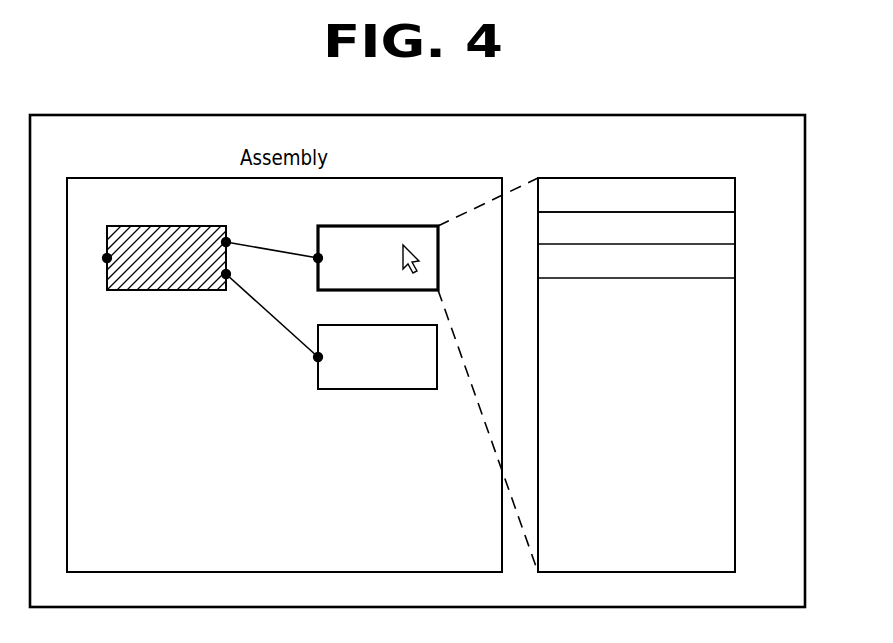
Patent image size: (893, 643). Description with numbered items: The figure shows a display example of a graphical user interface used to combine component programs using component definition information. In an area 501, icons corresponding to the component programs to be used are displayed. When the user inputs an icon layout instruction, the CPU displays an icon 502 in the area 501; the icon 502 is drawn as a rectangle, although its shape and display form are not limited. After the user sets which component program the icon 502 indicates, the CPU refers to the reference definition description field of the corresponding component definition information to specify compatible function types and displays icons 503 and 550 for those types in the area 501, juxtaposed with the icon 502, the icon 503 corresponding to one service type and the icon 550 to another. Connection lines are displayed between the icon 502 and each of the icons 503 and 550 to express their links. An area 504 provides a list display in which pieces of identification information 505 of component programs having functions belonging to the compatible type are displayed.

The area 501 is at (112, 178).
The icon 502 is at (168, 226).
The icon 503 is at (381, 226).
The area 504 is at (718, 176).
The identification information 505 is at (727, 196).
The icon 550 is at (376, 391).